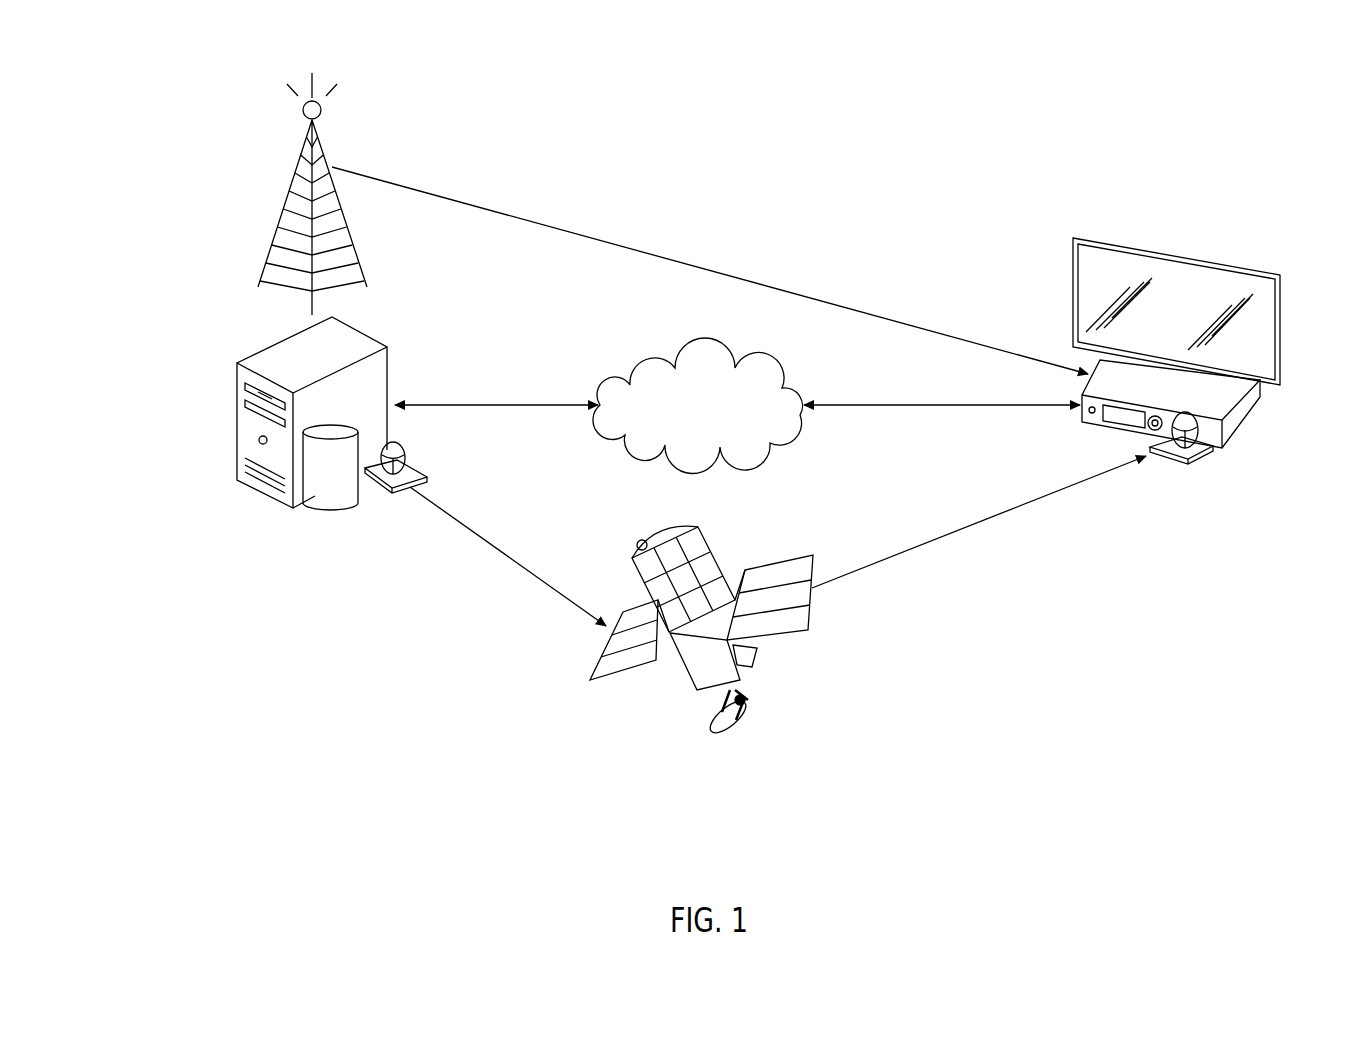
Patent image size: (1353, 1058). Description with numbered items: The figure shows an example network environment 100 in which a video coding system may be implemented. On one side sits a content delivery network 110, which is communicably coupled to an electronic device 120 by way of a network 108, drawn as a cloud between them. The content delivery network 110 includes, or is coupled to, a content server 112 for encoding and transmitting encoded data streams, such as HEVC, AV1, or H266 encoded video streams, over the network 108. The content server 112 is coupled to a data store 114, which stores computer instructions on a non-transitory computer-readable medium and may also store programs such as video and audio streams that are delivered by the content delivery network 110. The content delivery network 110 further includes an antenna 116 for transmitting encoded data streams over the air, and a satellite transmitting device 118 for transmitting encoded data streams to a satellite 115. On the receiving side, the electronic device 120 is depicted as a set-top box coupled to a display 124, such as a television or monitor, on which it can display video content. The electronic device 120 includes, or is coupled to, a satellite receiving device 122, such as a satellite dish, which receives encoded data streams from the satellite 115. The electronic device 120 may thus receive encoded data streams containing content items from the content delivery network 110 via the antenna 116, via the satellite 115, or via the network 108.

The network environment 100 is at (1175, 64).
The network 108 is at (733, 442).
The content delivery network 110 is at (155, 542).
The content server 112 is at (237, 408).
The data store 114 is at (338, 495).
The satellite 115 is at (750, 660).
The antenna 116 is at (283, 210).
The satellite transmitting device 118 is at (410, 455).
The electronic device 120 is at (1240, 413).
The satellite receiving device 122 is at (1170, 458).
The display 124 is at (1200, 262).